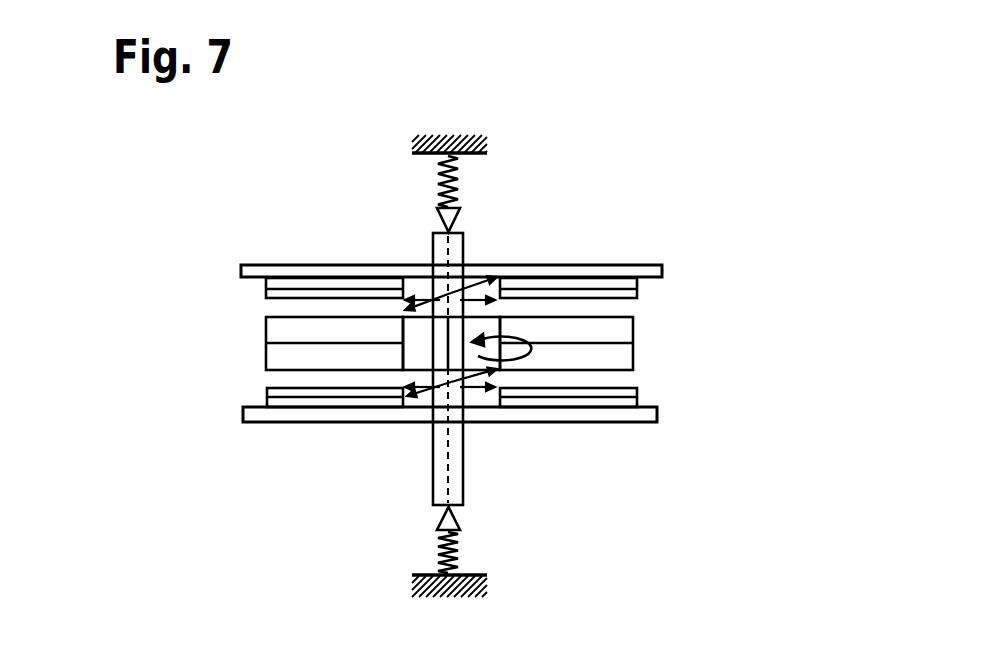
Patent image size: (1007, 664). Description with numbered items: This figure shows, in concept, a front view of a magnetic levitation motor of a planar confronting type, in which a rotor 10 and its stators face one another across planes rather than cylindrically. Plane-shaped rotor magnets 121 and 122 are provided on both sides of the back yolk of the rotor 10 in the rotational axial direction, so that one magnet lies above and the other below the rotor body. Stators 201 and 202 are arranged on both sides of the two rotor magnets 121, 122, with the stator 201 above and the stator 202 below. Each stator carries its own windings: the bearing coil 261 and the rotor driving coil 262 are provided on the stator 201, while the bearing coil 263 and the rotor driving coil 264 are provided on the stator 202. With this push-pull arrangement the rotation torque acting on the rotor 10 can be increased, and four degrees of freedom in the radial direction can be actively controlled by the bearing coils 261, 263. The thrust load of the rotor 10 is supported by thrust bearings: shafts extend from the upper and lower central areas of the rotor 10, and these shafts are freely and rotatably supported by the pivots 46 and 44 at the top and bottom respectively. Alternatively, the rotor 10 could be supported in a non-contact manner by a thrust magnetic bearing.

The rotor 10 is at (509, 336).
The rotor magnet 121 is at (633, 333).
The rotor magnet 122 is at (633, 360).
The stator 201 is at (496, 241).
The stator 202 is at (402, 425).
The bearing coil 261 is at (663, 277).
The rotor driving coil 262 is at (640, 288).
The bearing coil 263 is at (245, 408).
The rotor driving coil 264 is at (270, 400).
The pivot 44 is at (469, 517).
The pivot 46 is at (479, 216).